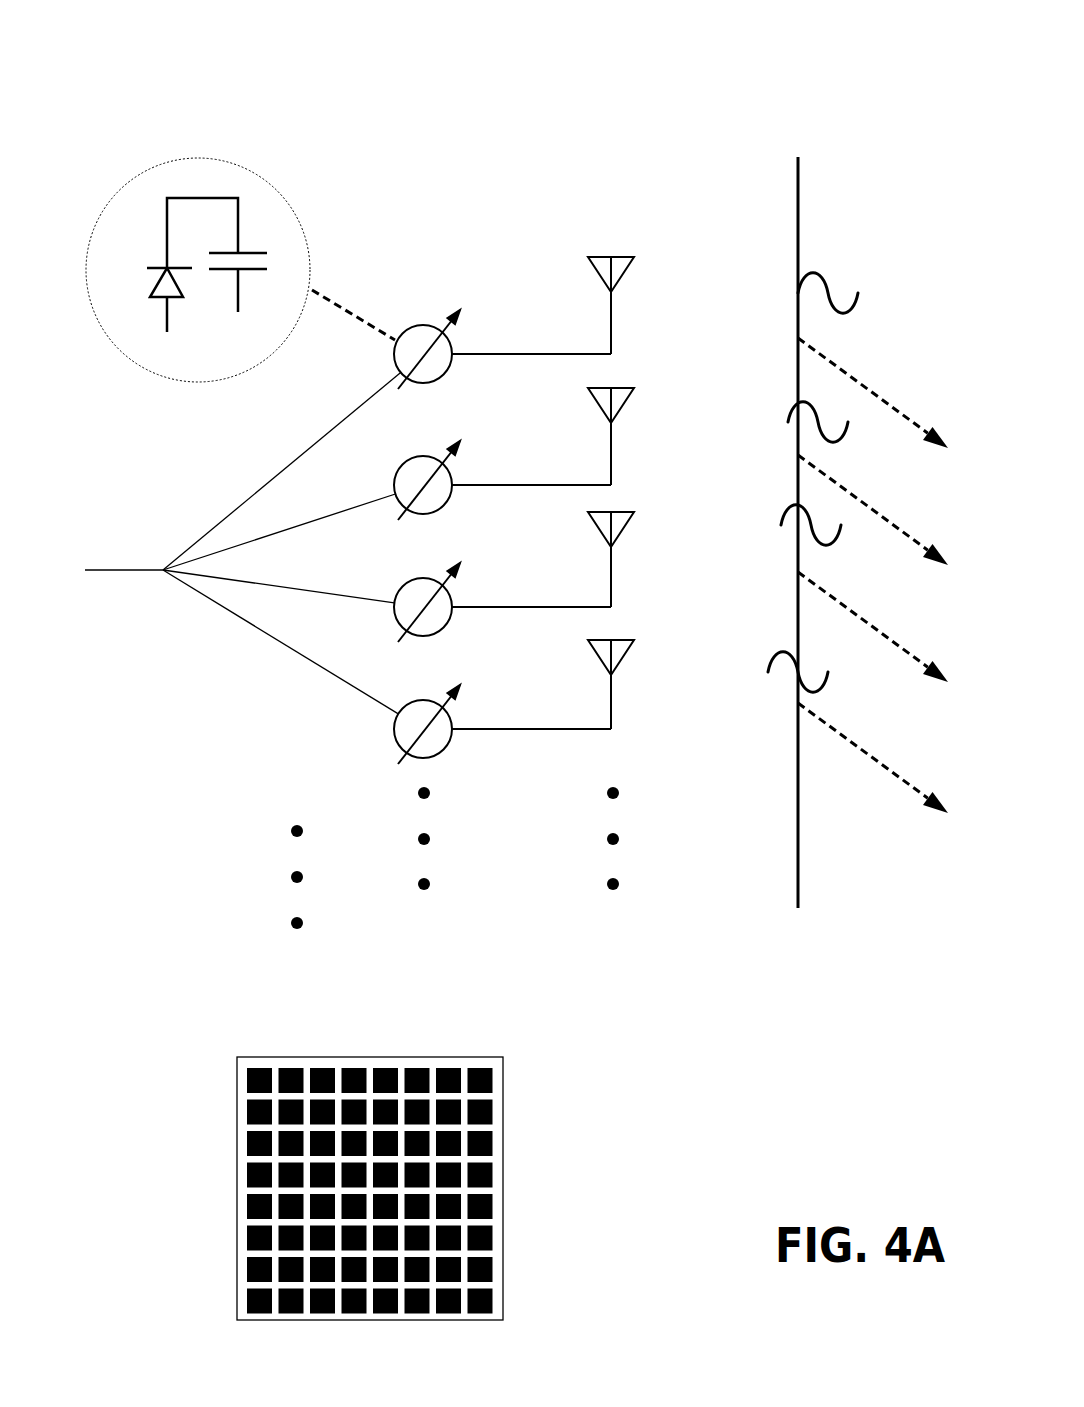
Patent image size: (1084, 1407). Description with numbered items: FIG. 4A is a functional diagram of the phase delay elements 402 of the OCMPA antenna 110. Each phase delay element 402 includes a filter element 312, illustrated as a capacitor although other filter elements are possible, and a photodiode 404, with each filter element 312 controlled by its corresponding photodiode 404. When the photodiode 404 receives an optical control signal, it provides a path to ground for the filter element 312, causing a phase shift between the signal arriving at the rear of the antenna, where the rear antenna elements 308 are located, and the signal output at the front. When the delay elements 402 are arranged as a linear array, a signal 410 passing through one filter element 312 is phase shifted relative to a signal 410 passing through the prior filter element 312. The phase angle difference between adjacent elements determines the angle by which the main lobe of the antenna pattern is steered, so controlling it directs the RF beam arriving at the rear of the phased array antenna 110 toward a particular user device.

The OCMPA antenna 110 is at (517, 105).
The rear antenna elements 308 is at (611, 676).
The filter element 312 is at (245, 253).
The phase delay element 402 is at (423, 325).
The photodiode 404 is at (158, 278).
The signal 410 is at (826, 280).